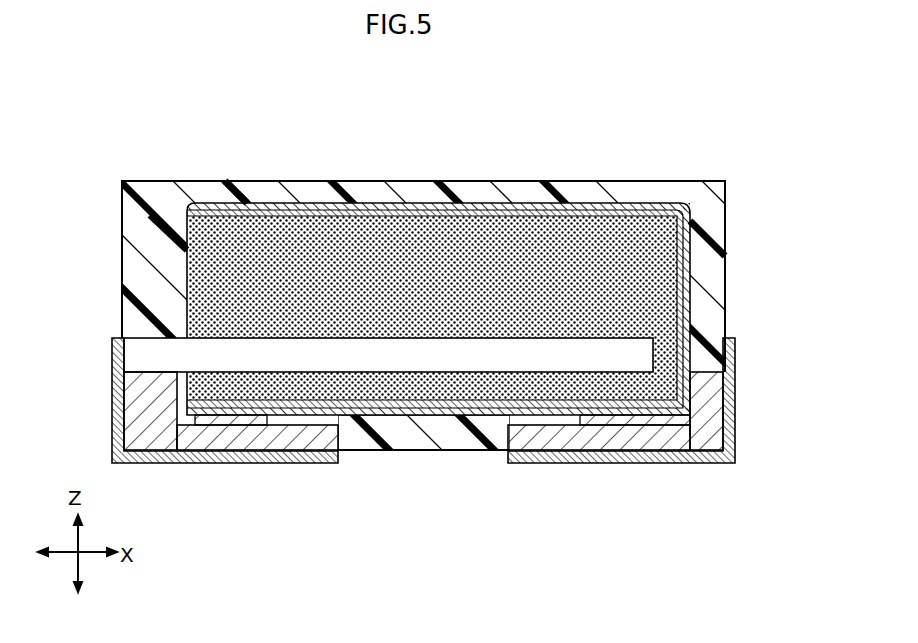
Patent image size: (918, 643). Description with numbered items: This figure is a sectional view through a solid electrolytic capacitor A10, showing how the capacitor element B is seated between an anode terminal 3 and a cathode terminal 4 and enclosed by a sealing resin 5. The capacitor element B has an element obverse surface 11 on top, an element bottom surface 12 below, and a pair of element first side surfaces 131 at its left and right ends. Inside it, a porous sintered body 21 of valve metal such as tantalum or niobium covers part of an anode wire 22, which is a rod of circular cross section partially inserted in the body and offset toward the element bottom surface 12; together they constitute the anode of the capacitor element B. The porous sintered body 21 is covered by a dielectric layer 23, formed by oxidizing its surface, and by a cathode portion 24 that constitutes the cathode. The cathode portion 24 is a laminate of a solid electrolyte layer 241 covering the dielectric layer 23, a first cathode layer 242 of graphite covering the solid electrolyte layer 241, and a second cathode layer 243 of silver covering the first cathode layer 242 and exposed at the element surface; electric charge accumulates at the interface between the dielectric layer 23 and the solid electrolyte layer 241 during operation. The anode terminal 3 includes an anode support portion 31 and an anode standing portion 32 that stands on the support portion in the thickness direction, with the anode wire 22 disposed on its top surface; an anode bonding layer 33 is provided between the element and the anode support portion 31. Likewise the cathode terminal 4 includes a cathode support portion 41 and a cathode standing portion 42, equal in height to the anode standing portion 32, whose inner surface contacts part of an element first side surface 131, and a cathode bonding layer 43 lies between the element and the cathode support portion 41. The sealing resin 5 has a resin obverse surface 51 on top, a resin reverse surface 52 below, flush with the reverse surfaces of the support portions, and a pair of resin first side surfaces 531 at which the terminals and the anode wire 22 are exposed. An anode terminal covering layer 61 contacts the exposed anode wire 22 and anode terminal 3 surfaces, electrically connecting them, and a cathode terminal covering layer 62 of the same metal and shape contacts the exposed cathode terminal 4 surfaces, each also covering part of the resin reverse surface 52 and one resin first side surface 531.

The solid electrolytic capacitor A10 is at (459, 300).
The sealing resin 5 is at (459, 300).
The resin obverse surface 51 is at (652, 181).
The resin reverse surface 52 is at (384, 422).
The resin first side surface 531 is at (725, 258).
The element obverse surface 11 is at (283, 181).
The element bottom surface 12 is at (413, 420).
The element first side surface 131 is at (178, 248).
The capacitor element B is at (240, 181).
The cathode portion 24 is at (438, 251).
The solid electrolyte layer 241 is at (460, 205).
The first cathode layer 242 is at (435, 266).
The second cathode layer 243 is at (435, 309).
The porous sintered body 21 is at (433, 262).
The dielectric layer 23 is at (372, 300).
The anode wire 22 is at (172, 358).
The anode terminal 3 is at (186, 440).
The anode support portion 31 is at (270, 437).
The anode standing portion 32 is at (152, 400).
The anode bonding layer 33 is at (215, 422).
The anode terminal covering layer 61 is at (118, 440).
The cathode terminal 4 is at (656, 442).
The cathode support portion 41 is at (600, 437).
The cathode standing portion 42 is at (707, 403).
The cathode bonding layer 43 is at (646, 426).
The cathode terminal covering layer 62 is at (735, 433).